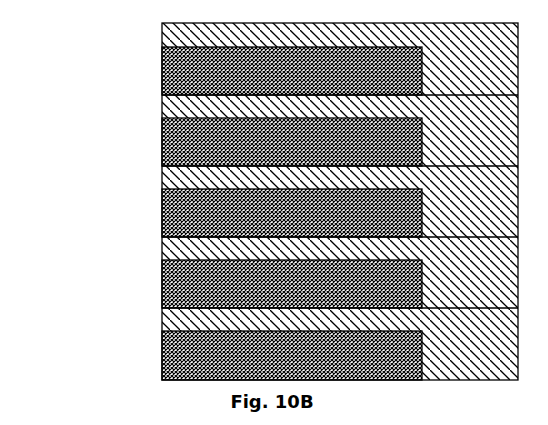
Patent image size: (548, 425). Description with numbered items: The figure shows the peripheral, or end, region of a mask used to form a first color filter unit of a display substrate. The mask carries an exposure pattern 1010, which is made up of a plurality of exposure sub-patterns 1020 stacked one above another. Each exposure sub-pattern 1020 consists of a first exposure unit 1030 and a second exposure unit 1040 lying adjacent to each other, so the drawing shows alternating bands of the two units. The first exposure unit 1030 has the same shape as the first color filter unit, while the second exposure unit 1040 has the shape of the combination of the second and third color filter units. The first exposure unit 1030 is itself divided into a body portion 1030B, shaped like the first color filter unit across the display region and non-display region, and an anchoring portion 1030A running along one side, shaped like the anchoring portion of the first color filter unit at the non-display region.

The exposure pattern 1010 is at (72, 59).
The exposure sub-pattern 1020 is at (297, 195).
The first exposure unit 1030 is at (320, 201).
The anchoring portion 1030A is at (470, 201).
The body portion 1030B is at (292, 177).
The second exposure unit 1040 is at (272, 213).